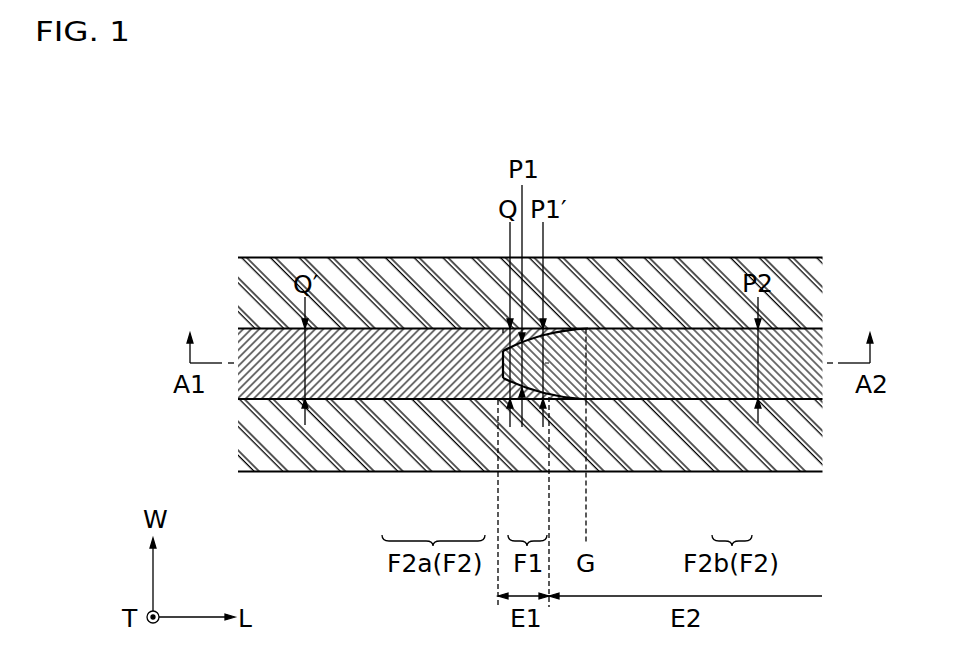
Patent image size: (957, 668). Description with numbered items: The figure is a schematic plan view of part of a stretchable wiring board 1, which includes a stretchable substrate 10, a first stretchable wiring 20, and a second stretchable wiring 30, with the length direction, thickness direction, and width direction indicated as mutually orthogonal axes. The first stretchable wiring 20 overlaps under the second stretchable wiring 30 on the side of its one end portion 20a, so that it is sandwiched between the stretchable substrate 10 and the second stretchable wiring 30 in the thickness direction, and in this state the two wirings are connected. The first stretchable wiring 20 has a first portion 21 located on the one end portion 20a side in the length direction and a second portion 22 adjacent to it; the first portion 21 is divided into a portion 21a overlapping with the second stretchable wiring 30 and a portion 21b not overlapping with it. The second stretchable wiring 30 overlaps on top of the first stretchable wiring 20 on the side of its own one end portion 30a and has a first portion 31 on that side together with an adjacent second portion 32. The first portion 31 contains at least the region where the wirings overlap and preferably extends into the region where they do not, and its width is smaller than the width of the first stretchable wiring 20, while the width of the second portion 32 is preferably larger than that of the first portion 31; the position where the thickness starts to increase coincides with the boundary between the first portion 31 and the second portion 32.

The stretchable wiring board 1 is at (806, 226).
The stretchable substrate 10 is at (257, 288).
The first stretchable wiring 20 is at (413, 324).
The one end portion 20a is at (547, 363).
The first portion 21 is at (490, 345).
The portion overlapping with the second stretchable wiring 21a is at (492, 340).
The portion not overlapping with the second stretchable wiring 21b is at (503, 353).
The second portion 22 is at (376, 338).
The second stretchable wiring 30 is at (562, 345).
The one end portion 30a is at (497, 363).
The first portion 31 is at (475, 365).
The second portion 32 is at (667, 350).